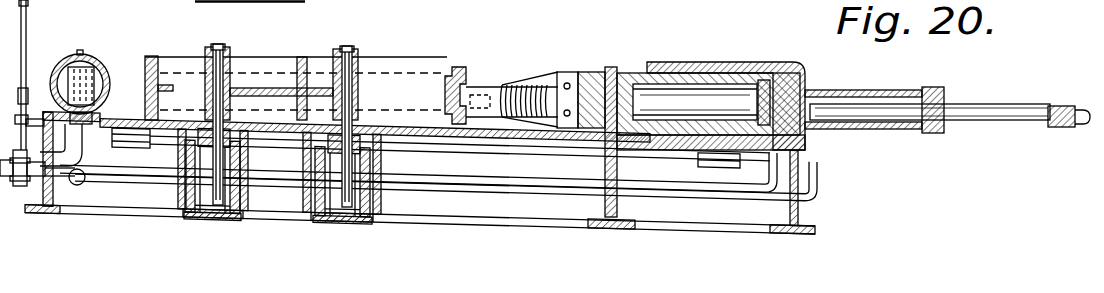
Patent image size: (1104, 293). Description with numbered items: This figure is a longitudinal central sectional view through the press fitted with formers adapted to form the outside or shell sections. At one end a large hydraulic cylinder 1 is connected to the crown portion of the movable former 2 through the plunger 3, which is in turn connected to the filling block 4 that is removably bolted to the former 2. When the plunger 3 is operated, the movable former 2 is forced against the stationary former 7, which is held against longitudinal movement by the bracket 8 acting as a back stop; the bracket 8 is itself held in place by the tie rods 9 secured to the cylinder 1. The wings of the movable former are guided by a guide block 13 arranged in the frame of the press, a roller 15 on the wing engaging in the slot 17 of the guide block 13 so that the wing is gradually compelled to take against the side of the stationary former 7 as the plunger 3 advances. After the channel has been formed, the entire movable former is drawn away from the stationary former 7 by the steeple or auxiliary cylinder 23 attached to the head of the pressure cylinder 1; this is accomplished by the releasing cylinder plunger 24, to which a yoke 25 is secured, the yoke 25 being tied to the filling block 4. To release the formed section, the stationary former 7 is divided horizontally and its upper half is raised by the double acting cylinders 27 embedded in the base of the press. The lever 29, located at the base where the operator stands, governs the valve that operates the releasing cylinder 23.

The cylinder 1 is at (773, 70).
The movable former 2 is at (53, 66).
The plunger 3 is at (20, 185).
The filling block 4 is at (587, 72).
The stationary former 7 is at (462, 68).
The bracket 8 is at (110, 118).
The tie rods 9 is at (488, 145).
The guide block 13 is at (282, 3).
The roller 15 is at (249, 6).
The slot 17 is at (147, 55).
The steeple or auxiliary cylinder 23 is at (872, 127).
The releasing cylinder plunger 24 is at (993, 124).
The yoke 25 is at (1060, 130).
The double acting cylinders 27 is at (190, 192).
The lever 29 is at (27, 13).